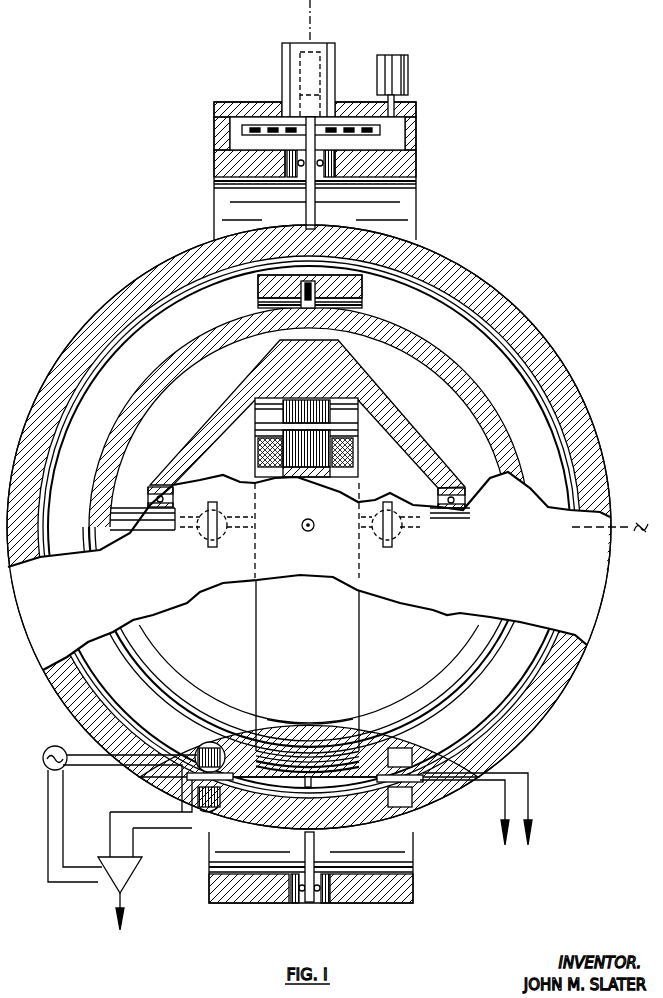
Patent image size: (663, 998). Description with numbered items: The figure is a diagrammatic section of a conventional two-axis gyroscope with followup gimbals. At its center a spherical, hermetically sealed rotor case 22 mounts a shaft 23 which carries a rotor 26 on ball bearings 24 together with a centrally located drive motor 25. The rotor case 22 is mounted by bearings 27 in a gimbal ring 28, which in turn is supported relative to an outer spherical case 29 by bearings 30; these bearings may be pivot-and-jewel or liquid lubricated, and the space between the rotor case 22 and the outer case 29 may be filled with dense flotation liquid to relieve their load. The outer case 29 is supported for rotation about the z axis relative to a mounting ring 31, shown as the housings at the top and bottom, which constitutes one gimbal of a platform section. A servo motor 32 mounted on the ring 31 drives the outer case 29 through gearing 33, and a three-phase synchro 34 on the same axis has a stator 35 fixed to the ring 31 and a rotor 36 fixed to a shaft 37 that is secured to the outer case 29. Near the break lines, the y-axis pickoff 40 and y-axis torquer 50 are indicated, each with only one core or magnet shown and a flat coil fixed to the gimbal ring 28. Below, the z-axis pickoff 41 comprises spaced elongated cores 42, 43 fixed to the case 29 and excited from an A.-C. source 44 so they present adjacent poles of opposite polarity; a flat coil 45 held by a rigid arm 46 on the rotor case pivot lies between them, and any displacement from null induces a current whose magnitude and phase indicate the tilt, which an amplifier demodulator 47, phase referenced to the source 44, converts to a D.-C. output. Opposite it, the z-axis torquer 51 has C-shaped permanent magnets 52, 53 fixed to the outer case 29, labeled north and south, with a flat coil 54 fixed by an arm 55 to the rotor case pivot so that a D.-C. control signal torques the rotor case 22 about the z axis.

The rotor case 22 is at (440, 361).
The shaft 23 is at (143, 517).
The ball bearings 24 is at (463, 492).
The drive motor 25 is at (350, 443).
The rotor 26 is at (393, 421).
The bearings 27 is at (263, 293).
The gimbal ring 28 is at (358, 288).
The outer spherical case 29 is at (553, 352).
The bearings 30 is at (307, 532).
The mounting ring 31 is at (418, 165).
The servo motor 32 is at (405, 68).
The gearing 33 is at (315, 130).
The three-phase synchro 34 is at (283, 99).
The stator 35 is at (332, 48).
The rotor 36 is at (311, 60).
The shaft 37 is at (314, 213).
The pickoff 40 is at (203, 540).
The pickoff 41 is at (226, 772).
The elongated core 42 is at (207, 808).
The elongated core 43 is at (203, 747).
The A.-C. source 44 is at (43, 759).
The flat coil 45 is at (190, 789).
The rigid arm 46 is at (262, 777).
The amplifier demodulator 47 is at (133, 871).
The control torquer 50 is at (401, 540).
The control torquer 51 is at (385, 775).
The C-shaped permanent magnet 52 is at (407, 749).
The C-shaped permanent magnet 53 is at (413, 814).
The flat coil 54 is at (449, 792).
The arm 55 is at (347, 777).